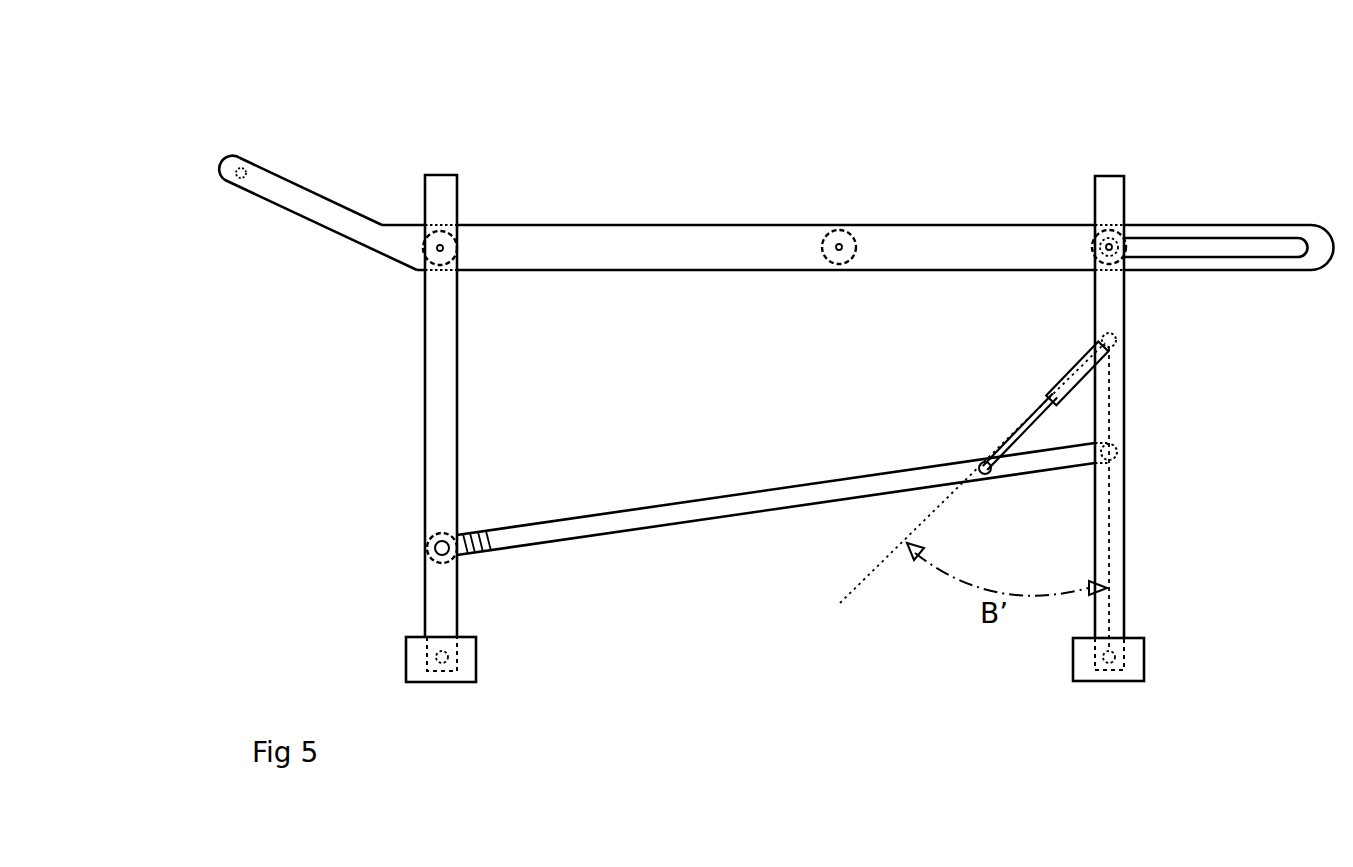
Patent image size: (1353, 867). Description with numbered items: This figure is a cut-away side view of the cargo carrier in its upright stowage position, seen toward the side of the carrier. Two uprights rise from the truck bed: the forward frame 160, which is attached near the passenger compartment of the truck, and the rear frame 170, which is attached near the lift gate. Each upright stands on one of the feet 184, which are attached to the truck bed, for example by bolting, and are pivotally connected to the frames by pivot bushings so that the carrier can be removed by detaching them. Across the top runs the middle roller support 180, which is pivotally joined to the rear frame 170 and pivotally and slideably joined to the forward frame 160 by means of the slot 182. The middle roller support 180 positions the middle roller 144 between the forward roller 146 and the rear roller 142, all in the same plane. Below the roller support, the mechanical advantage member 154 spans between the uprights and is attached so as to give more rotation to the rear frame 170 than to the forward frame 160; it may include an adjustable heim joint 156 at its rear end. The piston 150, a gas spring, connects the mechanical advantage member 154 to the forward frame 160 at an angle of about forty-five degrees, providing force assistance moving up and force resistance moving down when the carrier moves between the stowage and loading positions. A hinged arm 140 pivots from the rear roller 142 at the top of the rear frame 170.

The hinged arm 140 is at (231, 170).
The rear roller 142 is at (431, 247).
The middle roller 144 is at (840, 245).
The forward roller 146 is at (1098, 240).
The piston 150 is at (1112, 345).
The mechanical advantage member 154 is at (717, 508).
The adjustable heim joint 156 is at (487, 553).
The forward frame 160 is at (1113, 549).
The rear frame 170 is at (447, 453).
The middle roller support 180 is at (913, 245).
The slot 182 is at (1223, 247).
The feet 184 is at (1146, 652).